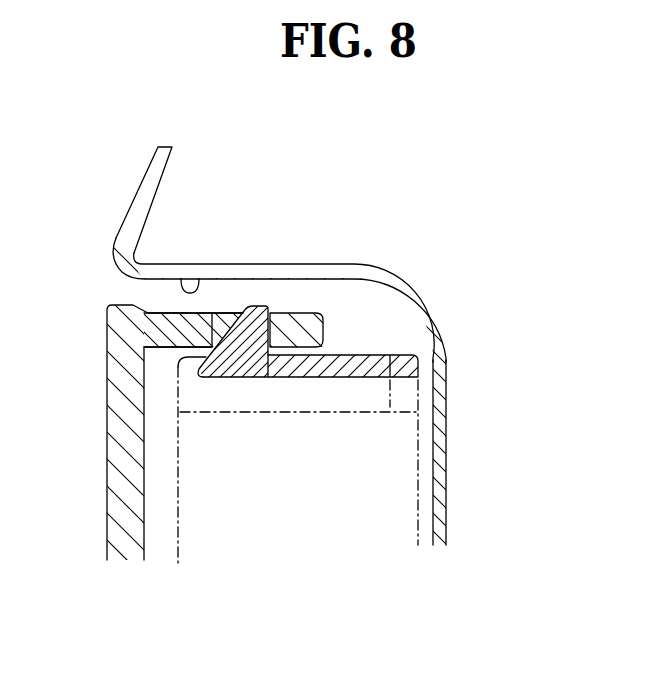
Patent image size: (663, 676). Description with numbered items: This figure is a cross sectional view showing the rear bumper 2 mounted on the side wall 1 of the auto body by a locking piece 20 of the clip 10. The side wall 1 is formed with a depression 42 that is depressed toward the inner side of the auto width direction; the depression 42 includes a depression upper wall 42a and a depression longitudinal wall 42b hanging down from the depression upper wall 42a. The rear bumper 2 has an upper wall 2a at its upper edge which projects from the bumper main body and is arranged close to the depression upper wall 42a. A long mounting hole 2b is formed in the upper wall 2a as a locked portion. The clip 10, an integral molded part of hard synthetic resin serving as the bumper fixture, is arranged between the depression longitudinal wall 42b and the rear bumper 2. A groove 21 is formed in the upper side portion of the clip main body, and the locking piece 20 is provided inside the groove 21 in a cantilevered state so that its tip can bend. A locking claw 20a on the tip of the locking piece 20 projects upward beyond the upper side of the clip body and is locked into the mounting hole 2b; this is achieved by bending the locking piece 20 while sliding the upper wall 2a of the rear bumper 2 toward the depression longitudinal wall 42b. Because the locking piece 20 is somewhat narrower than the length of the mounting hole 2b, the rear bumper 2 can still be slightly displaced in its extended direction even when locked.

The side wall 1 is at (148, 167).
The rear bumper 2 is at (110, 432).
The upper wall 2a is at (297, 322).
The mounting hole 2b is at (224, 323).
The clip 10 is at (313, 520).
The locking piece 20 is at (275, 284).
The locking claw 20a is at (262, 303).
The groove 21 is at (232, 400).
The depression 42 is at (392, 322).
The depression upper wall 42a is at (206, 263).
The depression longitudinal wall 42b is at (445, 484).